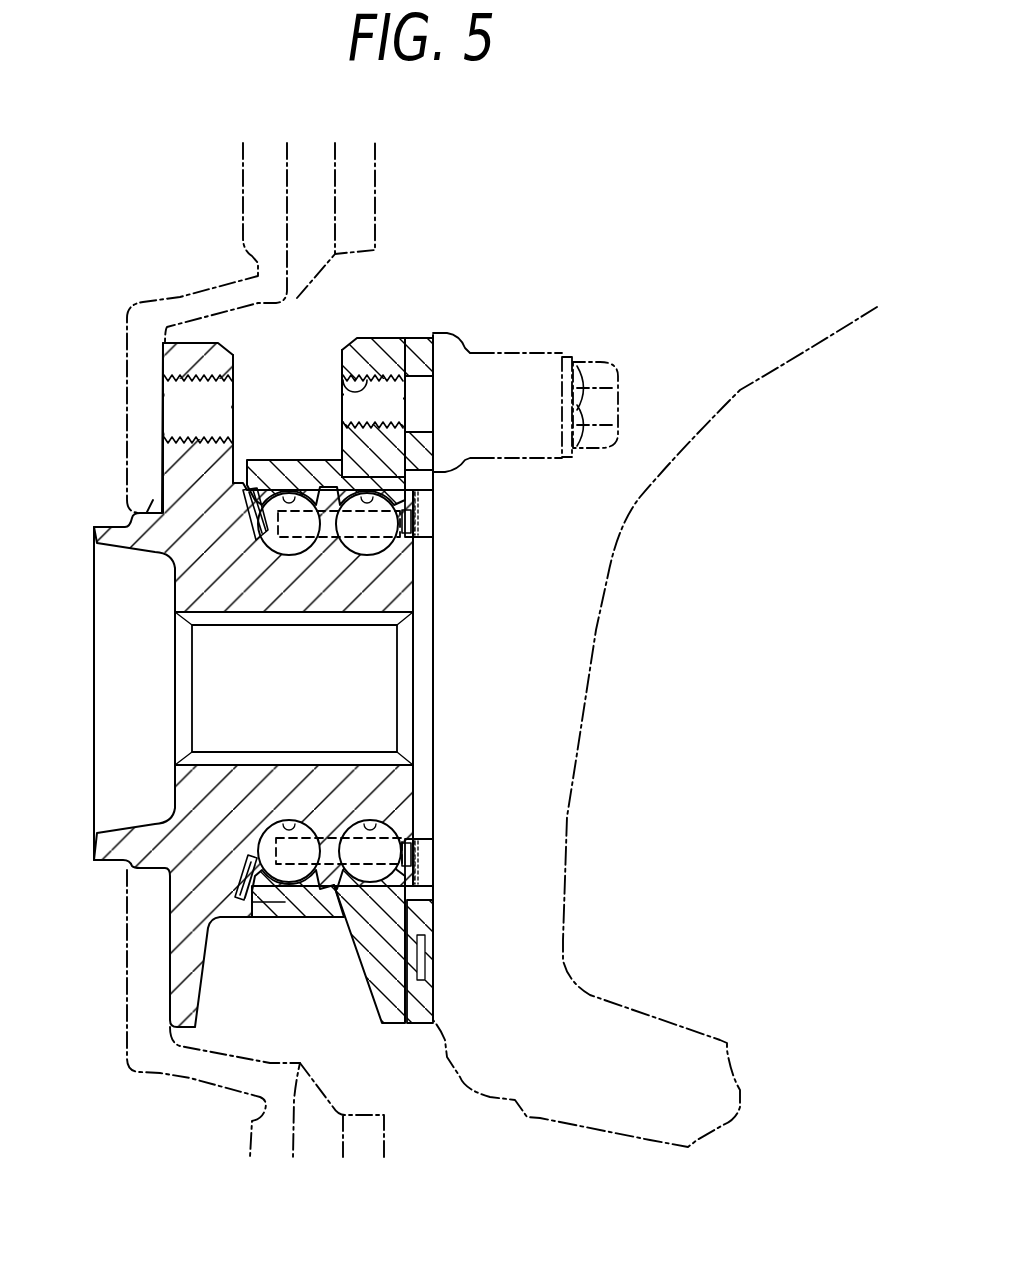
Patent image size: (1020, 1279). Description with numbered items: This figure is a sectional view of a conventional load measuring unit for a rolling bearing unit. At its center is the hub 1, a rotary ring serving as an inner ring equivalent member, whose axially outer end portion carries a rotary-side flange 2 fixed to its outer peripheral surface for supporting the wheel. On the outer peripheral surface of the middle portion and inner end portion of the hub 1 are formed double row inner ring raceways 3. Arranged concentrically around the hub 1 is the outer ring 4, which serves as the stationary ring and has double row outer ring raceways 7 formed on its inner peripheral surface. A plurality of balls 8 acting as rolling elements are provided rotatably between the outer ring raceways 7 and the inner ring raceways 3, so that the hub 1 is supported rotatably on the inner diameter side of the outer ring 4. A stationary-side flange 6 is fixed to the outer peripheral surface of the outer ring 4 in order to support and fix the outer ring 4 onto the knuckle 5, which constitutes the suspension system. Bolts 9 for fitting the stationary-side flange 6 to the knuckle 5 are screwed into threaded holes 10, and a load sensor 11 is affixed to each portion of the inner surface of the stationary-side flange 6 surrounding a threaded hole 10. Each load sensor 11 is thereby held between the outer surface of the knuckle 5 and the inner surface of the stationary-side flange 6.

The hub 1 is at (183, 577).
The rotary-side flange 2 is at (183, 362).
The inner ring raceway 3 is at (243, 838).
The outer ring 4 is at (360, 937).
The knuckle 5 is at (565, 942).
The stationary-side flange 6 is at (387, 353).
The outer ring raceway 7 is at (352, 462).
The ball 8 is at (367, 540).
The bolt 9 is at (600, 403).
The threaded hole 10 is at (343, 390).
The load sensor 11 is at (437, 354).